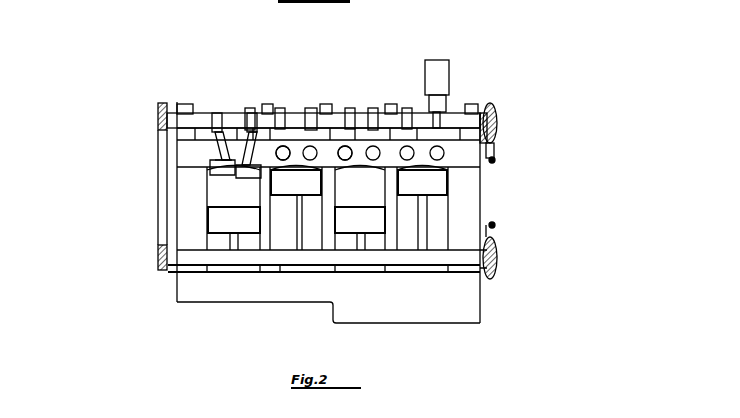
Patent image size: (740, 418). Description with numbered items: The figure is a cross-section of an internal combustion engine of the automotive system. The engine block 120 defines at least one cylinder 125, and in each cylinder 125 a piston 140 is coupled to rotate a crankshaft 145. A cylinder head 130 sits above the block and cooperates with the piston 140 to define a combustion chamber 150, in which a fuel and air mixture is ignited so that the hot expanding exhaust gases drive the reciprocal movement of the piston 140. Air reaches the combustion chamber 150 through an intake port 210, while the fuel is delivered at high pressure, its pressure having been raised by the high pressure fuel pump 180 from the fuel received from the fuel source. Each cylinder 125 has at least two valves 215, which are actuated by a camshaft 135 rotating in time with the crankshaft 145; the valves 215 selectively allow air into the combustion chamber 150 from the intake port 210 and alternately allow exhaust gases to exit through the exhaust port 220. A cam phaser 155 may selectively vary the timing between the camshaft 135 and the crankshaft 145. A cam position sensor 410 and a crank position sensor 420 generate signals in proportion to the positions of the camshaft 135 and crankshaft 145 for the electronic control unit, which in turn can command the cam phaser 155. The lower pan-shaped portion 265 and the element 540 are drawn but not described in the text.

The engine block 120 is at (178, 208).
The cylinder 125 is at (330, 147).
The cylinder head 130 is at (185, 163).
The camshaft 135 is at (233, 115).
The piston 140 is at (363, 218).
The crankshaft 145 is at (202, 262).
The combustion chamber 150 is at (410, 168).
The cam phaser 155 is at (157, 117).
The high pressure fuel pump 180 is at (450, 67).
The intake port 210 is at (338, 150).
The valves 215 is at (183, 153).
The exhaust port 220 is at (310, 150).
The oil pan 265 is at (437, 310).
The cam position sensor 410 is at (493, 158).
The crank position sensor 420 is at (495, 223).
The injector nozzle 540 is at (452, 99).